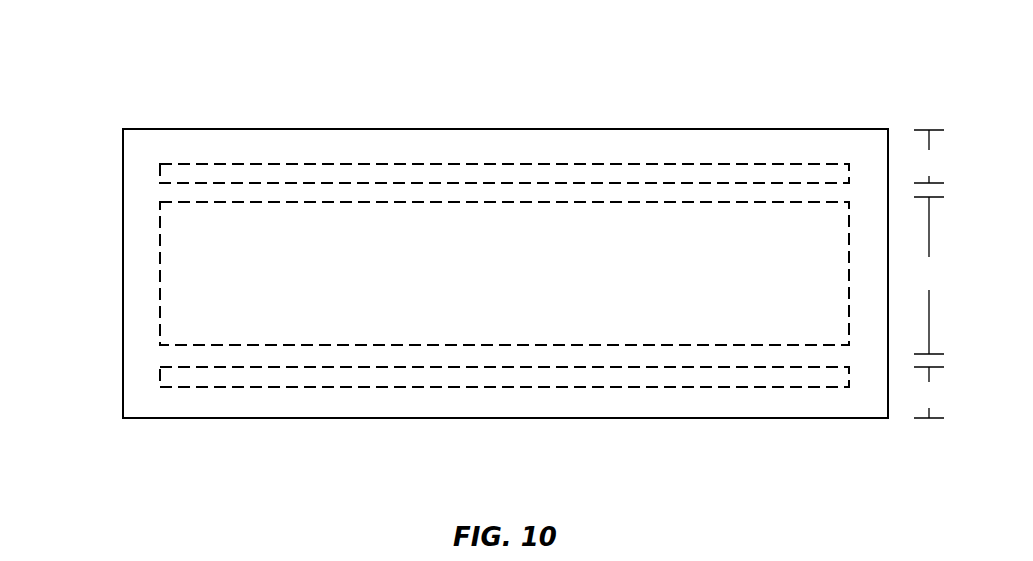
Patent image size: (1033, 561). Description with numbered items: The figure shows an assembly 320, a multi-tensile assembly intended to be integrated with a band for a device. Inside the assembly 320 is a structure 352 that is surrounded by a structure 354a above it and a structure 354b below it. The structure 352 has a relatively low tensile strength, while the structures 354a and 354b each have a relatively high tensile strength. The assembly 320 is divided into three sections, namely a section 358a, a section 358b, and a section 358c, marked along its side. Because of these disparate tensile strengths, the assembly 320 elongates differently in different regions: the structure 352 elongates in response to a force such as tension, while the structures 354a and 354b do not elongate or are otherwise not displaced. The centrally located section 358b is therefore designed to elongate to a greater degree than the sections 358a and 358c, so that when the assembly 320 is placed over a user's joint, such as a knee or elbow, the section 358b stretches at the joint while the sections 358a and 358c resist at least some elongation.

The assembly 320 is at (178, 128).
The structure 352 is at (160, 257).
The structure 354a is at (750, 164).
The structure 354b is at (700, 387).
The section 358a is at (928, 156).
The section 358b is at (929, 275).
The section 358c is at (929, 392).